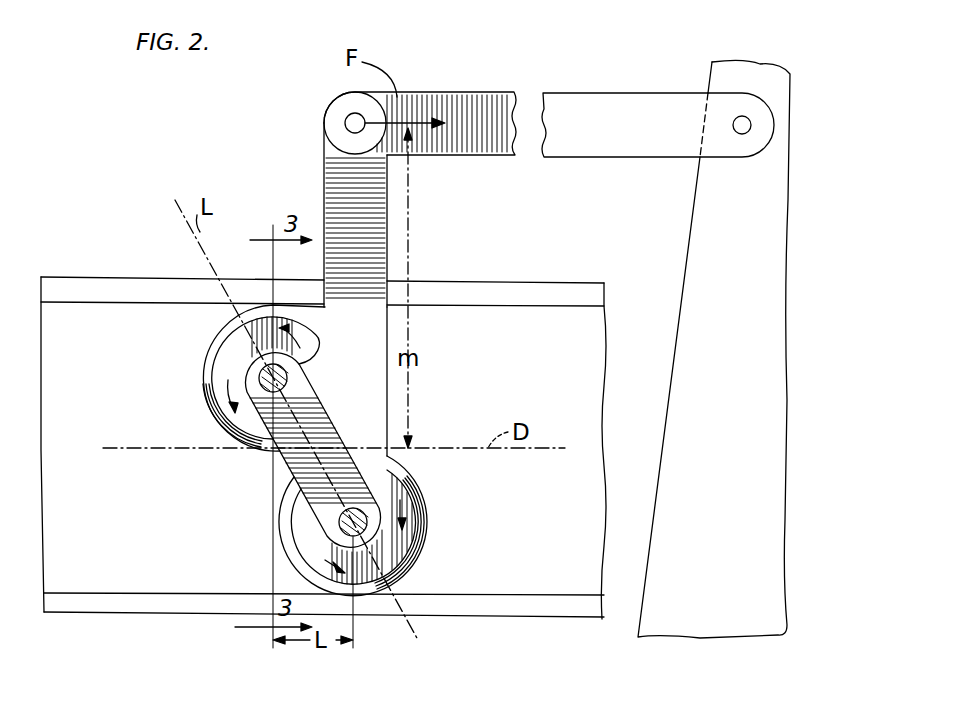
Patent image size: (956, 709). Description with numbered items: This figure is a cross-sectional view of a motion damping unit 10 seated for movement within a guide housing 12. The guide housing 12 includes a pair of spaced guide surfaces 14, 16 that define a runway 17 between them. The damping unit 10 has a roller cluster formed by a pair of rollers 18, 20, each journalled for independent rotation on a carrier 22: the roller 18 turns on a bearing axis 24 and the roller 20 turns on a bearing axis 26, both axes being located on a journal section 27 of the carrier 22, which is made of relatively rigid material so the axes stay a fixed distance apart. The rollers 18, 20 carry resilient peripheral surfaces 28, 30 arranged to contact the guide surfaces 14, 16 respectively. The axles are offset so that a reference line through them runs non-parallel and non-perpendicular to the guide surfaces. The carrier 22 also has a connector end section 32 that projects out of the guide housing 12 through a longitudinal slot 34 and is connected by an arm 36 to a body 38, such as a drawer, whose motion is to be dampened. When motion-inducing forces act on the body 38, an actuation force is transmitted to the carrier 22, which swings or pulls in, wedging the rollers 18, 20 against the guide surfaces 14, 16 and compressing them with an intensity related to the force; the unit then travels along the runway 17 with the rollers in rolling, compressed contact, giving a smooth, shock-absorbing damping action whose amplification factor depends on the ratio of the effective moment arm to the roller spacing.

The motion damping unit 10 is at (320, 170).
The guide housing 12 is at (147, 274).
The guide surface 14 is at (172, 304).
The guide surface 16 is at (175, 593).
The runway 17 is at (537, 335).
The roller 18 is at (203, 411).
The roller 20 is at (288, 556).
The carrier 22 is at (392, 393).
The bearing axis 24 is at (287, 378).
The bearing axis 26 is at (367, 493).
The journal section 27 is at (296, 452).
The resilient peripheral surface 28 is at (198, 355).
The resilient peripheral surface 30 is at (420, 570).
The connector end section 32 is at (388, 198).
The longitudinal slot 34 is at (446, 295).
The arm 36 is at (470, 92).
The body 38 is at (760, 62).